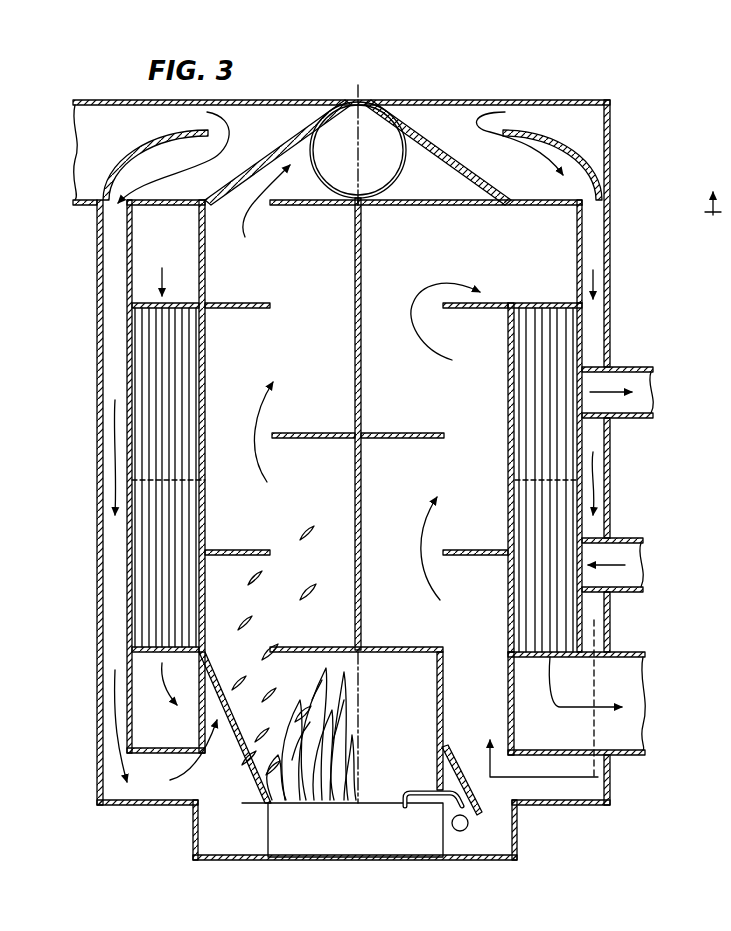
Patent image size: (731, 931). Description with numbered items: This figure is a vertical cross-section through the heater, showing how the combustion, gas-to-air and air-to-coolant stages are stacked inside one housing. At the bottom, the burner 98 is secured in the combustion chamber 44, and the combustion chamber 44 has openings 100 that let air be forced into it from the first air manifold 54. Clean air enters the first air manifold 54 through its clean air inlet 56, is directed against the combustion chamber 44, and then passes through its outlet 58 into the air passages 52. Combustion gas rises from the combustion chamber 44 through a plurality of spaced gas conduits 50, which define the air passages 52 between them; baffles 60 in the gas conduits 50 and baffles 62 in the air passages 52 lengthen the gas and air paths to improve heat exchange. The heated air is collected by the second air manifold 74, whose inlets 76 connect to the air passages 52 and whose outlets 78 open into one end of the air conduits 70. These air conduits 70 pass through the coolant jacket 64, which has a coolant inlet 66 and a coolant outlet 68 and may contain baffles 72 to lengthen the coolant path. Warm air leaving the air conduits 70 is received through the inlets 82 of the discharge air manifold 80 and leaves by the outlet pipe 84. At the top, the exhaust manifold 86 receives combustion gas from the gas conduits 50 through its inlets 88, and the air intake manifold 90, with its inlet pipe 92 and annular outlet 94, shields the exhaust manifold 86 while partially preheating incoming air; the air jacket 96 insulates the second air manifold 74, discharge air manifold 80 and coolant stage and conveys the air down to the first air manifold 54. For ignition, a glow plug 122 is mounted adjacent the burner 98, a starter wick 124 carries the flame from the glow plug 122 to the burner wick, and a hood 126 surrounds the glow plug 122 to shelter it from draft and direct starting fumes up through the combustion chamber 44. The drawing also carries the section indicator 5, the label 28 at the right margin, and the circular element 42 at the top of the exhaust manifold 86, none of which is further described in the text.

The section line indicator 5 is at (704, 199).
The furnace assembly 28 is at (721, 613).
The exhaust flue pipe 42 is at (381, 107).
The combustion chamber 44 is at (257, 744).
The gas conduits 50 is at (249, 411).
The air passages 52 is at (423, 424).
The first air manifold 54 is at (128, 808).
The clean air inlet 56 is at (108, 757).
The outlet 58 is at (482, 665).
The baffles 60 is at (248, 302).
The baffles 62 is at (468, 309).
The coolant jacket 64 is at (127, 577).
The coolant inlet 66 is at (637, 546).
The coolant outlet 68 is at (643, 368).
The air conduits 70 is at (153, 333).
The baffles 72 is at (150, 485).
The second air manifold 74 is at (143, 236).
The inlets 76 is at (510, 260).
The outlets 78 is at (137, 304).
The discharge air manifold 80 is at (153, 720).
The inlets 82 is at (143, 657).
The outlet pipe 84 is at (560, 735).
The exhaust manifold 86 is at (430, 141).
The inlets 88 is at (237, 202).
The air intake manifold 90 is at (533, 101).
The inlet pipe 92 is at (123, 108).
The annular outlet 94 is at (590, 193).
The air jacket 96 is at (100, 403).
The burner 98 is at (355, 830).
The openings 100 is at (290, 793).
The glow plug 122 is at (470, 823).
The starter wick 124 is at (427, 790).
The hood 126 is at (477, 792).